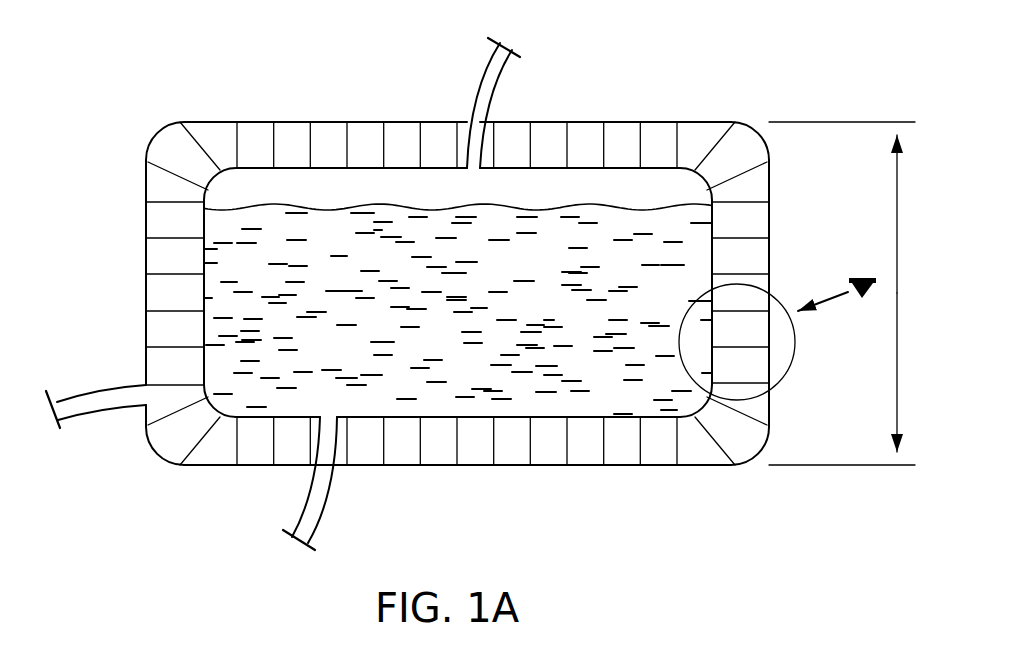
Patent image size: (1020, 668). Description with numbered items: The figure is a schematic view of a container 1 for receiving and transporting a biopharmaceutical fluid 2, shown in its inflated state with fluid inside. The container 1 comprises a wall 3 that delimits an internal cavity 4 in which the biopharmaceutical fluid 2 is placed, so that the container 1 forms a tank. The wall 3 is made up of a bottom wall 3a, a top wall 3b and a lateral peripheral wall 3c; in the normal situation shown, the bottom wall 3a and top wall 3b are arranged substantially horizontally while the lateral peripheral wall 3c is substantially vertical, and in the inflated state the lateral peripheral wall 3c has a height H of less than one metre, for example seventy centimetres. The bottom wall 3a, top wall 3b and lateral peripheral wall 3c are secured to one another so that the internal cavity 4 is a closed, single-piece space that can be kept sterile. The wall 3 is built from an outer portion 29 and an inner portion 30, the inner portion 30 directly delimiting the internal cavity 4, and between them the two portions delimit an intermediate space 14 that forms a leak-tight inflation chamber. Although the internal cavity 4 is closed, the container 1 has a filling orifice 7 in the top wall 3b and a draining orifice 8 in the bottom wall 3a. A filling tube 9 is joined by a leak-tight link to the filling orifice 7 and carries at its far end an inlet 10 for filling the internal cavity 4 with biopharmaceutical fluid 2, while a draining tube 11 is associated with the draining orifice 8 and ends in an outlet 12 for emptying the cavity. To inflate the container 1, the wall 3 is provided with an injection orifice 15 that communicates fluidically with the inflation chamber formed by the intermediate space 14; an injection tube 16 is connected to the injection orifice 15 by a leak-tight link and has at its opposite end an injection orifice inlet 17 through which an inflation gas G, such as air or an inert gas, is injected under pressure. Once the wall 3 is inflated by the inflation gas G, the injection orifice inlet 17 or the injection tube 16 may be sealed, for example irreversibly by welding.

The container 1 is at (675, 500).
The biopharmaceutical fluid 2 is at (653, 270).
The wall 3 is at (750, 262).
The bottom wall 3a is at (708, 467).
The top wall 3b is at (708, 122).
The lateral peripheral wall 3c is at (770, 178).
The internal cavity 4 is at (606, 198).
The filling orifice 7 is at (468, 174).
The draining orifice 8 is at (328, 413).
The filling tube 9 is at (487, 103).
The inlet 10 is at (508, 43).
The draining tube 11 is at (318, 495).
The outlet 12 is at (300, 537).
The intermediate space 14 is at (176, 217).
The injection orifice 15 is at (152, 396).
The injection tube 16 is at (98, 397).
The injection orifice inlet 17 is at (47, 410).
The outer portion 29 is at (255, 119).
The inner portion 30 is at (299, 172).
The inflation gas G is at (167, 288).
The height H is at (846, 293).